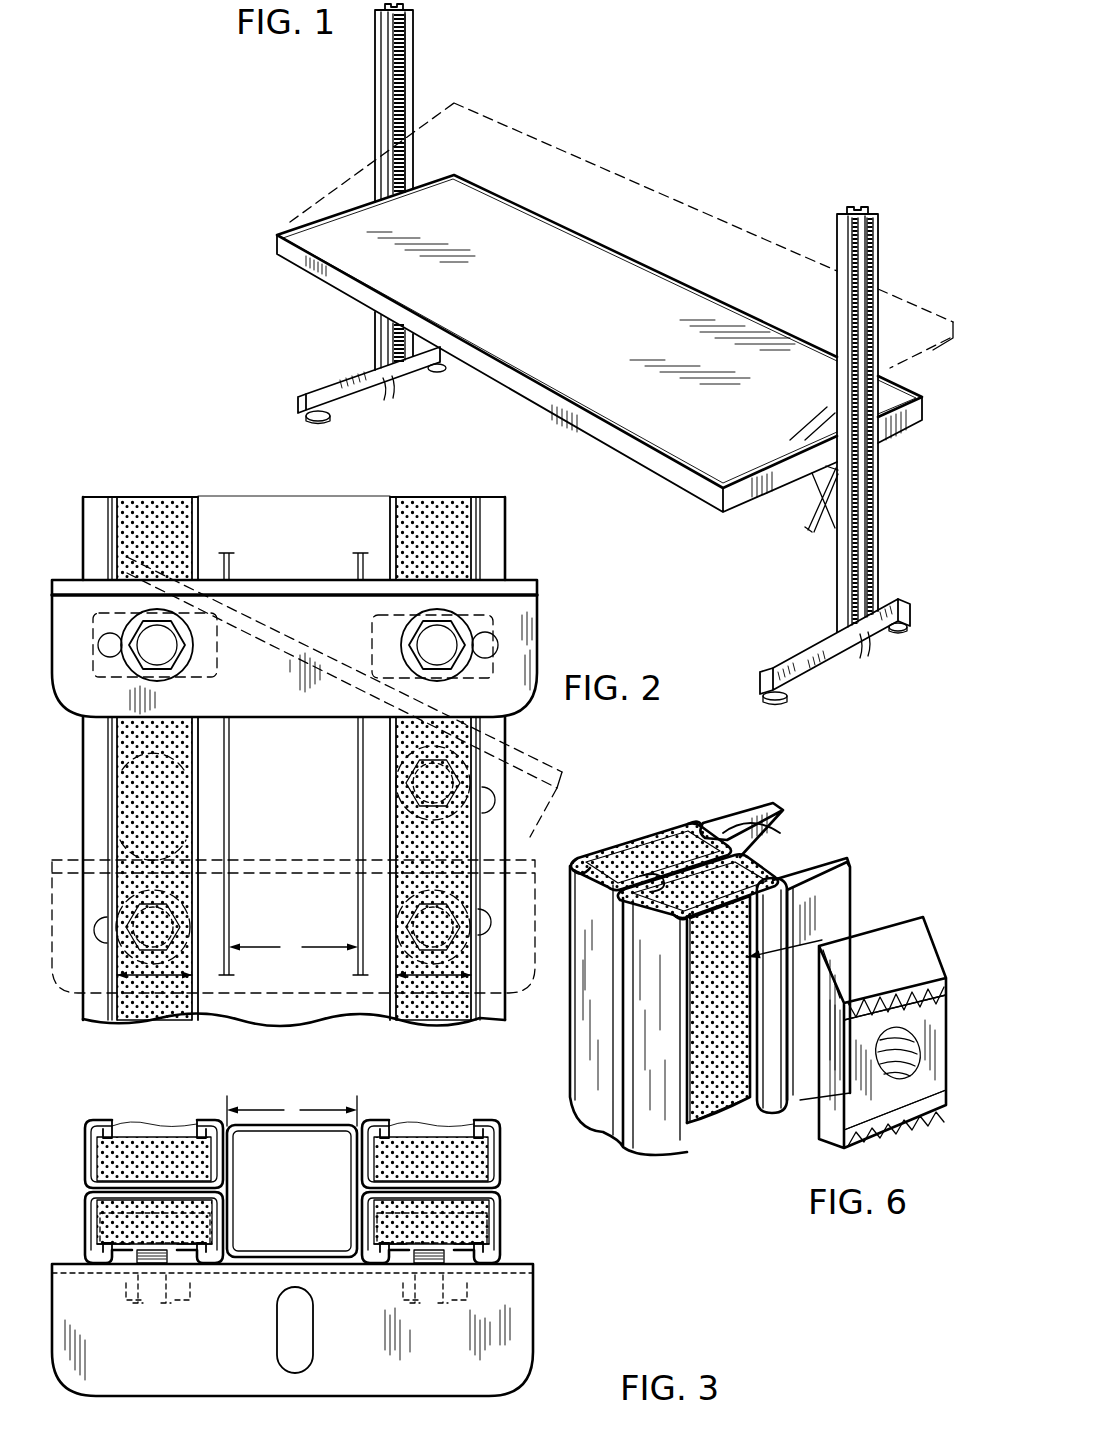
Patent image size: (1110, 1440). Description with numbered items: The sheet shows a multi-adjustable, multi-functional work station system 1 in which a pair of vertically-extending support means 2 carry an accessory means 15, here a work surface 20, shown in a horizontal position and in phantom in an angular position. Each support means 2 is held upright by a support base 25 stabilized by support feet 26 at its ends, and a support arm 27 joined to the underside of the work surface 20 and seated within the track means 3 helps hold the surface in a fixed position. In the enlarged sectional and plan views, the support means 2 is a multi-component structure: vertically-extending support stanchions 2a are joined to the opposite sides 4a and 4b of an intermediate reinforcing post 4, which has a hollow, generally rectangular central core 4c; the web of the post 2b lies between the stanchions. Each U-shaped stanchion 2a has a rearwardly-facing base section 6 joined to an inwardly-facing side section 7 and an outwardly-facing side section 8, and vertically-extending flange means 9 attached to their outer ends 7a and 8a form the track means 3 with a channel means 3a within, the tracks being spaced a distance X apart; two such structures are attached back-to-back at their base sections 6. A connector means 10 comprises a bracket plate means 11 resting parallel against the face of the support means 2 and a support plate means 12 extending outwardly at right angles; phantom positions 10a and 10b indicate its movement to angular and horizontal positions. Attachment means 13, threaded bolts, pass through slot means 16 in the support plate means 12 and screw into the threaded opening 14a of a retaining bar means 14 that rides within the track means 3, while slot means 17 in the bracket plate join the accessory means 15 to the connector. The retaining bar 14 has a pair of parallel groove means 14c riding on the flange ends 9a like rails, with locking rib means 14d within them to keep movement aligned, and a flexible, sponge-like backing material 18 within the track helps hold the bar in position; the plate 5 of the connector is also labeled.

In FIG. 1, the work station system 1 is at (699, 106).
In FIG. 2, the work station system 1 is at (126, 427).
In FIG. 3, the work station system 1 is at (568, 1227).
In FIG. 1, the support means 2 is at (412, 62).
In FIG. 2, the support means 2 is at (505, 730).
In FIG. 6, the support means 2 is at (686, 826).
In FIG. 3, the support means 2 is at (85, 1126).
In FIG. 2, the support stanchion 2a is at (83, 788).
In FIG. 2, the web of post 2b is at (276, 832).
In FIG. 1, the track means 3 is at (391, 392).
In FIG. 2, the track means 3 is at (136, 1021).
In FIG. 6, the track means 3 is at (631, 846).
In FIG. 3, the track means 3 is at (158, 1112).
In FIG. 2, the channel means 3a is at (150, 978).
In FIG. 2, the reinforcing post 4 is at (320, 978).
In FIG. 6, the reinforcing post 4 is at (815, 860).
In FIG. 3, the reinforcing post 4 is at (330, 1092).
In FIG. 2, the side of reinforcing post 4a is at (232, 746).
In FIG. 3, the side of reinforcing post 4a is at (240, 1198).
In FIG. 2, the side of reinforcing post 4b is at (355, 746).
In FIG. 3, the side of reinforcing post 4b is at (355, 1198).
In FIG. 3, the central box section 4c is at (280, 1180).
In FIG. 3, the bracket plate 5 is at (533, 1316).
In FIG. 6, the base section 6 is at (648, 880).
In FIG. 3, the base section 6 is at (162, 1186).
In FIG. 2, the side section 7 is at (198, 514).
In FIG. 6, the side section 7 is at (760, 850).
In FIG. 3, the side section 7 is at (223, 1223).
In FIG. 3, the outer end of side section 7a is at (223, 1246).
In FIG. 2, the side section 8 is at (83, 534).
In FIG. 6, the side section 8 is at (645, 1088).
In FIG. 3, the side section 8 is at (85, 1149).
In FIG. 3, the outer end of side section 8a is at (85, 1169).
In FIG. 2, the flange means 9 is at (101, 510).
In FIG. 6, the flange means 9 is at (580, 862).
In FIG. 3, the flange means 9 is at (97, 1120).
In FIG. 2, the flange end 9a is at (190, 538).
In FIG. 6, the flange end 9a is at (695, 940).
In FIG. 3, the flange end 9a is at (185, 1125).
In FIG. 1, the connector means 10 is at (815, 497).
In FIG. 2, the connector means 10 is at (538, 641).
In FIG. 3, the connector means 10 is at (525, 1356).
In FIG. 2, the angular position of connector means 10a is at (153, 774).
In FIG. 2, the horizontal position of connector means 10b is at (172, 850).
In FIG. 2, the bracket plate means 11 is at (290, 592).
In FIG. 3, the bracket plate means 11 is at (202, 1350).
In FIG. 2, the support plate means 12 is at (321, 624).
In FIG. 3, the support plate means 12 is at (520, 1264).
In FIG. 2, the attachment means 13 is at (180, 640).
In FIG. 3, the attachment means 13 is at (150, 1305).
In FIG. 2, the retaining bar means 14 is at (205, 670).
In FIG. 6, the retaining bar means 14 is at (900, 918).
In FIG. 3, the retaining bar means 14 is at (175, 1252).
In FIG. 6, the threaded opening 14a is at (912, 1045).
In FIG. 3, the threaded opening 14a is at (135, 1252).
In FIG. 6, the groove means 14c is at (940, 978).
In FIG. 6, the locking rib means 14d is at (882, 1000).
In FIG. 1, the accessory means 15 is at (704, 247).
In FIG. 2, the slot means 16 is at (106, 638).
In FIG. 3, the slot means 17 is at (313, 1330).
In FIG. 2, the flexible backing material 18 is at (158, 503).
In FIG. 6, the flexible backing material 18 is at (656, 856).
In FIG. 3, the flexible backing material 18 is at (213, 1160).
In FIG. 1, the work surface 20 is at (588, 326).
In FIG. 1, the support base 25 is at (340, 382).
In FIG. 1, the support feet 26 is at (330, 420).
In FIG. 1, the support arm 27 is at (808, 528).